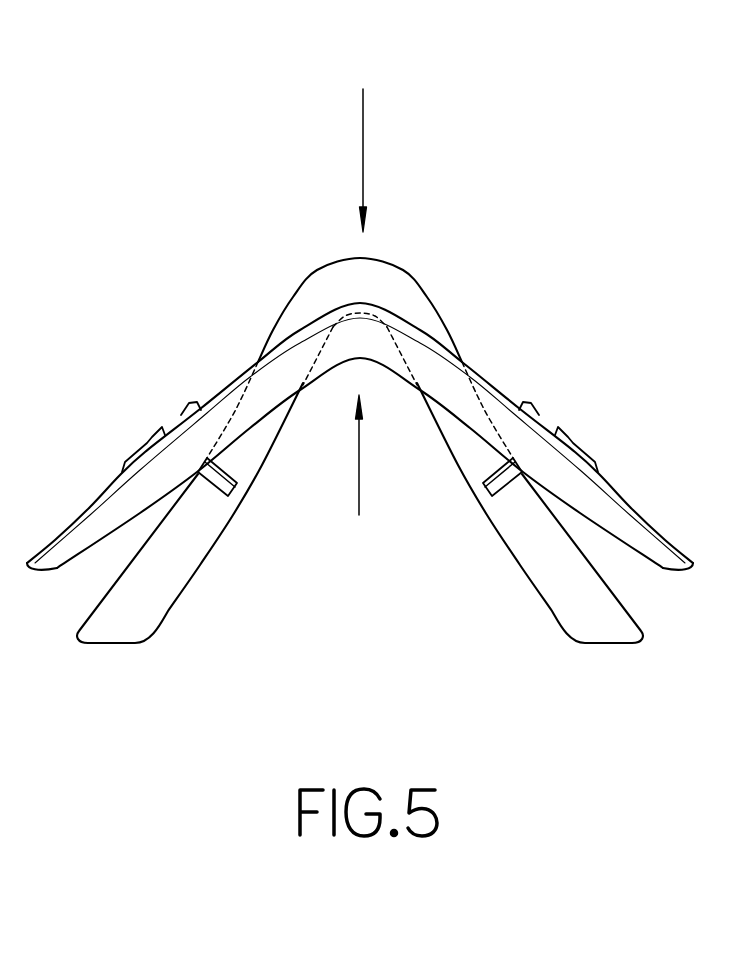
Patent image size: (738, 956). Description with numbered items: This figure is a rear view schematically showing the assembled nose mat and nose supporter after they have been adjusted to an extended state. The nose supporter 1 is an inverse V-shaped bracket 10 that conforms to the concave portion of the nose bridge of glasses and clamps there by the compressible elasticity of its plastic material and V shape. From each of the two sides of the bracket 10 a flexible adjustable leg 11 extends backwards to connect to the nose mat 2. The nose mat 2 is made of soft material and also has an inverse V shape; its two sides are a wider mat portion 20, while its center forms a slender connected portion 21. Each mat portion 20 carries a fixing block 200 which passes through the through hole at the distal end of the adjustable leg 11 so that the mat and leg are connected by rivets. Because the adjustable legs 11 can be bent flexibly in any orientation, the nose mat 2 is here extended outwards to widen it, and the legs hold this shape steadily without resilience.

The nose supporter 1 is at (362, 146).
The nose mat 2 is at (357, 472).
The bracket 10 is at (388, 280).
The adjustable leg 11 is at (217, 488).
The mat portion 20 is at (77, 545).
The connected portion 21 is at (335, 353).
The fixing block 200 is at (148, 432).